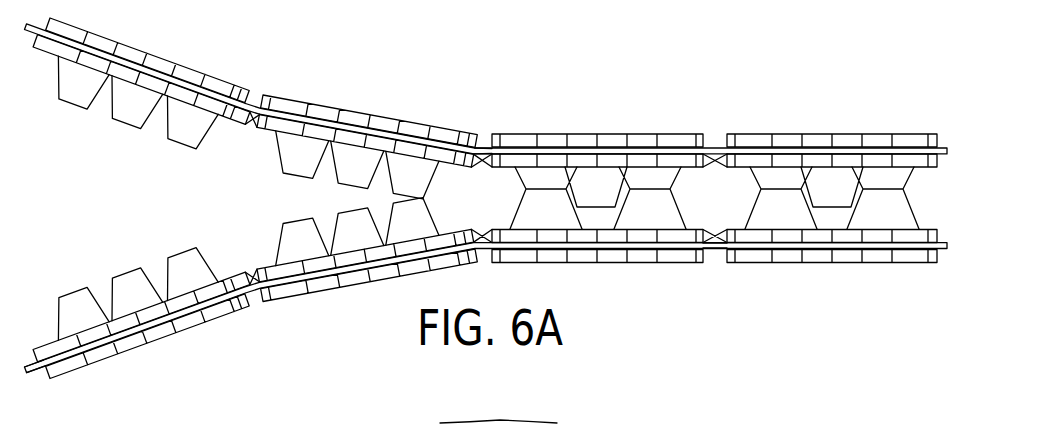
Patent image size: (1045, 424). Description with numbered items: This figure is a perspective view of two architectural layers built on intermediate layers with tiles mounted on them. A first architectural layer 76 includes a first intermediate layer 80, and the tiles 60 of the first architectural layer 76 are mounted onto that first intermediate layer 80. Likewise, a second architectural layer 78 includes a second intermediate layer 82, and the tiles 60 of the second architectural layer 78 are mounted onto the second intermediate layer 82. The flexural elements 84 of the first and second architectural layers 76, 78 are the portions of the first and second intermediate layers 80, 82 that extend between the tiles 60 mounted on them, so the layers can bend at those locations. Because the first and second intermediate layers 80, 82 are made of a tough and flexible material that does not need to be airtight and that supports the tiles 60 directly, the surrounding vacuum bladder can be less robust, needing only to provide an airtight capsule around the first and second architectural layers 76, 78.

The tiles 60 is at (187, 98).
The first architectural layer 76 is at (259, 88).
The second architectural layer 78 is at (45, 380).
The first intermediate layer 80 is at (480, 153).
The second intermediate layer 82 is at (722, 263).
The flexural elements 84 is at (253, 120).